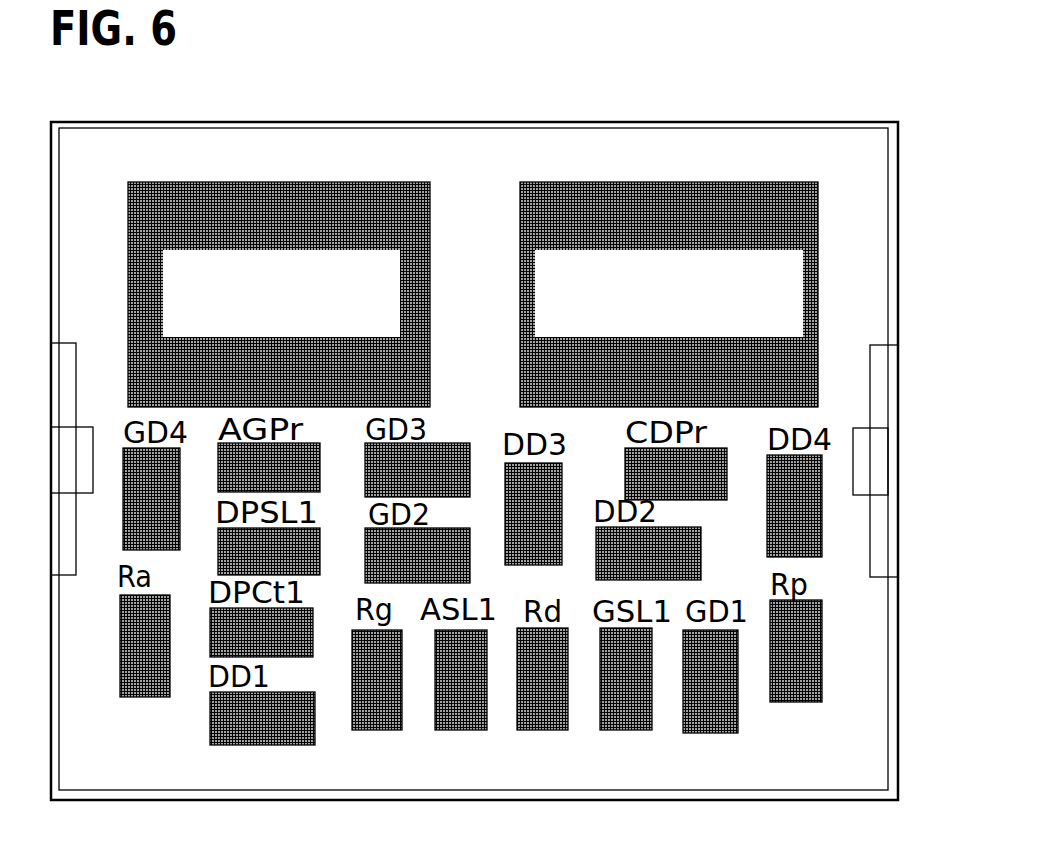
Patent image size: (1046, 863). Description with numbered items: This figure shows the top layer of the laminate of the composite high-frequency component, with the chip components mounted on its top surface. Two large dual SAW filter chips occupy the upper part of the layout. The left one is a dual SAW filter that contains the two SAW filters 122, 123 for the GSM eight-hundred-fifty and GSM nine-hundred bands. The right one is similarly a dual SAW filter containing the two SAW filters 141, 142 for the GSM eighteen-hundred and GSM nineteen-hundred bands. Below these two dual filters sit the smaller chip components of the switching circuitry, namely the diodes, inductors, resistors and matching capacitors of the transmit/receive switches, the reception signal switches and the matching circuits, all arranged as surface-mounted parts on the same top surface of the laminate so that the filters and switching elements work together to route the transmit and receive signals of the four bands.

The SAW filter 122 is at (332, 240).
The SAW filter 123 is at (428, 182).
The SAW filter 141 is at (722, 240).
The SAW filter 142 is at (816, 182).